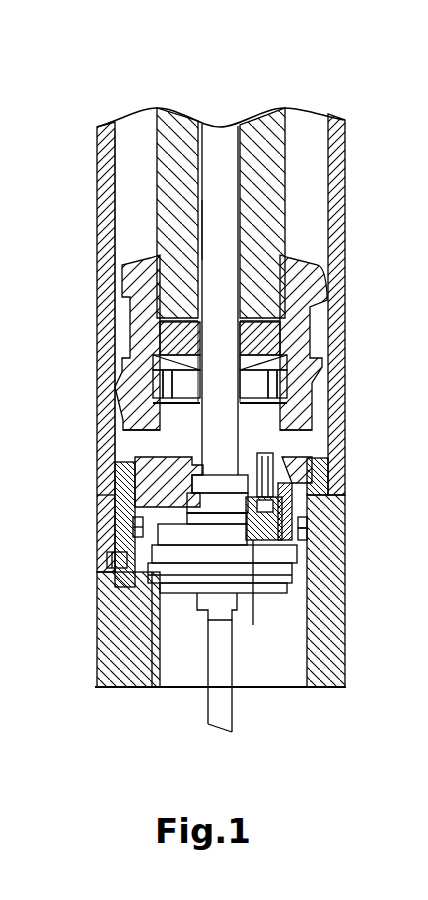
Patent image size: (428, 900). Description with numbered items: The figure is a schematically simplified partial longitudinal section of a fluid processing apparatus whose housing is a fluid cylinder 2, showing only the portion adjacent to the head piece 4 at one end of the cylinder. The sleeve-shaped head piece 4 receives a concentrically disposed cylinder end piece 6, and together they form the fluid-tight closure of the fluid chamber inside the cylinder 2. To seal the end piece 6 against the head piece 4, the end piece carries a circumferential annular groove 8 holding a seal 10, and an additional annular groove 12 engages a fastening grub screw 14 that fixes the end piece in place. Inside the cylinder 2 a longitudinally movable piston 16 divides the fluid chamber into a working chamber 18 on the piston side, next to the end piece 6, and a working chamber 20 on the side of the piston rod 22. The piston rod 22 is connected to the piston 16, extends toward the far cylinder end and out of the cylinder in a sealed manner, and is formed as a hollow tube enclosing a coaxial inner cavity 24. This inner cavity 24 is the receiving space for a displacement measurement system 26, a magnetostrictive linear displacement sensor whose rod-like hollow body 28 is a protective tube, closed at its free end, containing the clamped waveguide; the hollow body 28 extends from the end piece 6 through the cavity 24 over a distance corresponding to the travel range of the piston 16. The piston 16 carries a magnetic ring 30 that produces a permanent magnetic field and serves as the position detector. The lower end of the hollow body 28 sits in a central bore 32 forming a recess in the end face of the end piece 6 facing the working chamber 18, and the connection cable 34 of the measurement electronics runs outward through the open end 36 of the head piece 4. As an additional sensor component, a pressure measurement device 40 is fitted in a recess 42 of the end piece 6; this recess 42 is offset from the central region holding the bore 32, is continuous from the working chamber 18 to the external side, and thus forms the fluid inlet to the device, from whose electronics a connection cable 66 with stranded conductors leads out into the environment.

The fluid cylinder 2 is at (343, 233).
The head piece 4 is at (138, 624).
The cylinder end piece 6 is at (160, 503).
The annular groove 8 is at (130, 520).
The seal 10 is at (308, 527).
The annular groove 12 is at (152, 689).
The fastening grub screw 14 is at (135, 560).
The piston 16 is at (143, 390).
The working chamber 18 is at (152, 445).
The working chamber 20 is at (137, 202).
The piston rod 22 is at (173, 162).
The inner cavity 24 is at (240, 177).
The displacement measurement system 26 is at (229, 108).
The hollow body 28 is at (222, 232).
The magnetic ring 30 is at (273, 385).
The central bore 32 is at (200, 475).
The connection cable 34 is at (220, 683).
The open end 36 is at (270, 689).
The pressure measurement device 40 is at (297, 482).
The recess 42 is at (292, 462).
The connection cable 66 is at (253, 620).